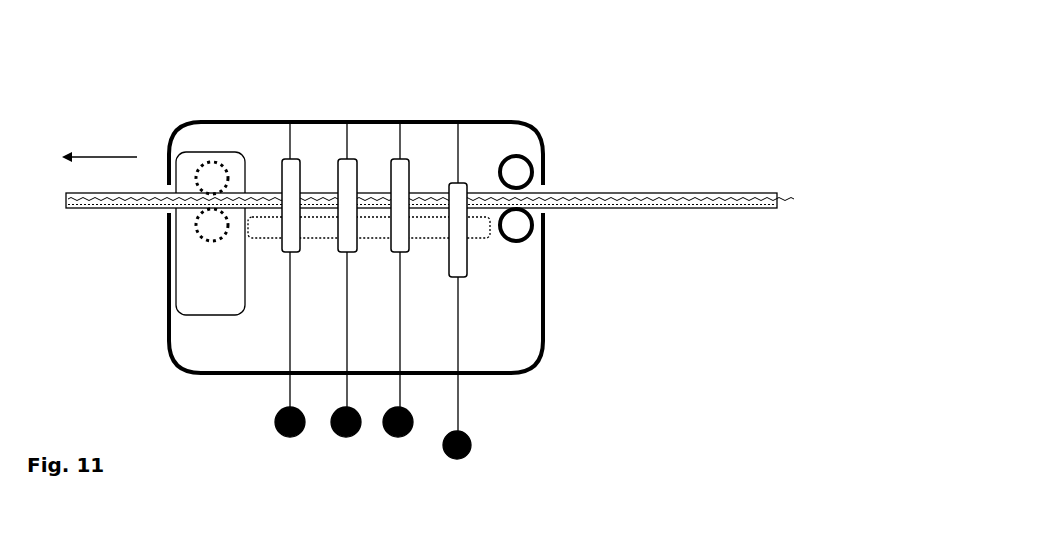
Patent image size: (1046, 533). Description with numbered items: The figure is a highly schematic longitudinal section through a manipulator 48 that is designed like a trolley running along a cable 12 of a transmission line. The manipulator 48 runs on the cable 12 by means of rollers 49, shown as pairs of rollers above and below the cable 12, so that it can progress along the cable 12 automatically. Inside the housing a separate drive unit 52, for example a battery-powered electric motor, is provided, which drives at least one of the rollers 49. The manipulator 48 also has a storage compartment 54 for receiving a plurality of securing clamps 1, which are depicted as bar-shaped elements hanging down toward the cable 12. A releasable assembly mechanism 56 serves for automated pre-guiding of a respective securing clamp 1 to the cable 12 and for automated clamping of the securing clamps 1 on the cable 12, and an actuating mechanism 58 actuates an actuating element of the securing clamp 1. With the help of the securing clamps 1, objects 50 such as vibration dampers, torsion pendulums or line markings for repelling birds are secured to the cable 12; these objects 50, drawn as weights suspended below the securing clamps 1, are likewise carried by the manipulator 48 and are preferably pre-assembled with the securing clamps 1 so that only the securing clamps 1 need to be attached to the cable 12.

The securing clamp 1 is at (290, 173).
The cable 12 is at (665, 192).
The manipulator 48 is at (480, 115).
The rollers 49 is at (203, 158).
The objects 50 is at (450, 458).
The drive unit 52 is at (195, 275).
The storage compartment 54 is at (378, 173).
The assembly mechanism 56 is at (348, 143).
The actuating mechanism 58 is at (425, 228).